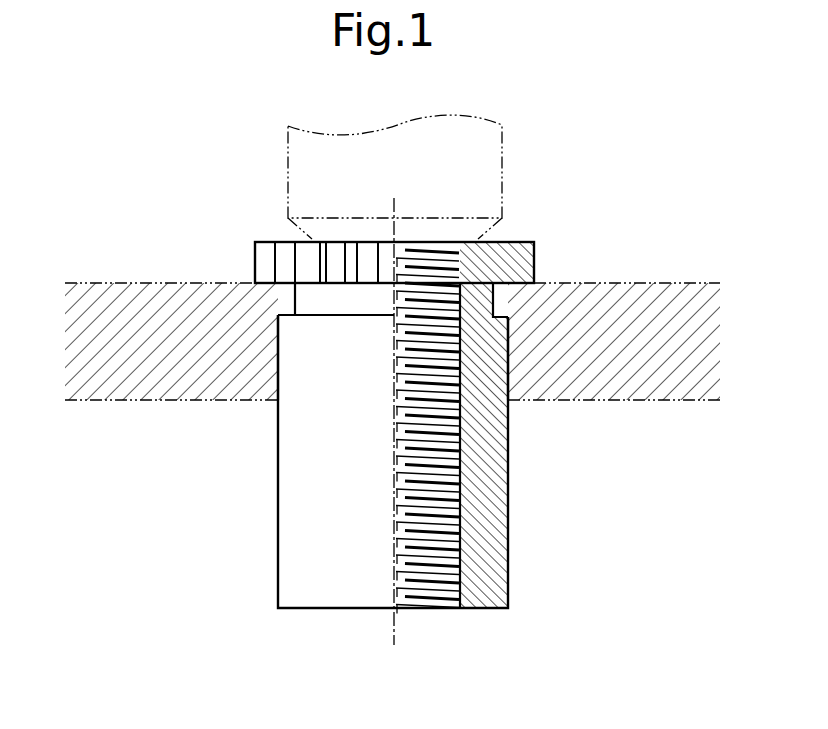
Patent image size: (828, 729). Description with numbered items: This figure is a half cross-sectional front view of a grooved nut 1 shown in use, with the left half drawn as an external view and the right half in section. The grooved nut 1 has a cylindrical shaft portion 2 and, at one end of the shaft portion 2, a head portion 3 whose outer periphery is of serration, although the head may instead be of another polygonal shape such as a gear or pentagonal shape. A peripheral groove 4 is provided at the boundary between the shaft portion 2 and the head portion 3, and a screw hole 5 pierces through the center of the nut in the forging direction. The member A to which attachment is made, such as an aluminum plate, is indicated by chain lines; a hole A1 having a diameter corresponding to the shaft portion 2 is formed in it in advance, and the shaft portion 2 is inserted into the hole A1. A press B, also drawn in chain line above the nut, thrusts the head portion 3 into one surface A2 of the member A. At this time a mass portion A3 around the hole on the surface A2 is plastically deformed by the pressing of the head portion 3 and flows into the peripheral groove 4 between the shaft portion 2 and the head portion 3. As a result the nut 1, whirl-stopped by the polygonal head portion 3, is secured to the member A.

The grooved nut 1 is at (281, 239).
The cylindrical shaft portion 2 is at (300, 495).
The head portion 3 is at (268, 260).
The peripheral groove 4 is at (296, 302).
The screw hole 5 is at (418, 585).
The member to which attachment is made A is at (664, 282).
The hole A1 is at (511, 364).
The one surface A2 is at (599, 283).
The mass portion A3 is at (519, 300).
The press B is at (502, 152).